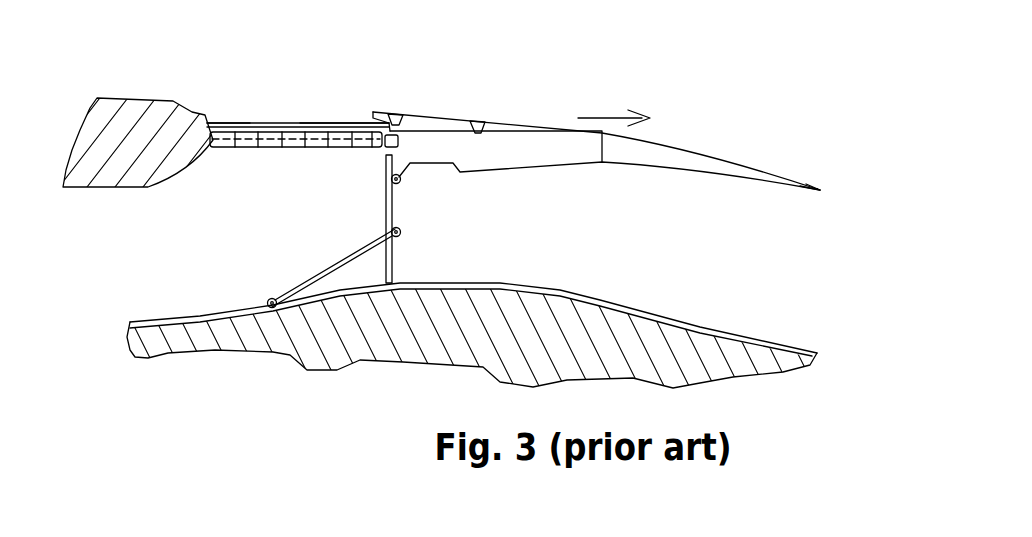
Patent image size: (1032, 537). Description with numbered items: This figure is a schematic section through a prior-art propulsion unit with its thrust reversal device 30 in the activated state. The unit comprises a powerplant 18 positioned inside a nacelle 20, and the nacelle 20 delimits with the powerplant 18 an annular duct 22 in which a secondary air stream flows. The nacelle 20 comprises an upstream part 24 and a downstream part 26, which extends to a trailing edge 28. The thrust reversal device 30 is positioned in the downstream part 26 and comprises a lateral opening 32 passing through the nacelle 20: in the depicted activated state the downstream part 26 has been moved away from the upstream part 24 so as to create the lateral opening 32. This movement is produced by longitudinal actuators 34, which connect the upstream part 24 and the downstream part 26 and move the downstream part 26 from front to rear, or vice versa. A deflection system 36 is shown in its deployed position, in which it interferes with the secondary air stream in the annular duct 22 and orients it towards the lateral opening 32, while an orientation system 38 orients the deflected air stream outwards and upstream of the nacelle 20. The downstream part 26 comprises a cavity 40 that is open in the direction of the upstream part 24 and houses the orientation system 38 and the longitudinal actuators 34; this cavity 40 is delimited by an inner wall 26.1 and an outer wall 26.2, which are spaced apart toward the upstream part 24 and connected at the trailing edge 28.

The powerplant 18 is at (748, 372).
The nacelle 20 is at (151, 114).
The annular duct 22 is at (156, 245).
The upstream part 24 is at (149, 104).
The downstream part 26 is at (607, 118).
The inner wall 26.1 is at (518, 168).
The outer wall 26.2 is at (500, 116).
The trailing edge 28 is at (822, 190).
The thrust reversal device 30 is at (292, 81).
The lateral opening 32 is at (240, 102).
The longitudinal actuators 34 is at (326, 108).
The deflection system 36 is at (414, 218).
The orientation system 38 is at (272, 158).
The cavity 40 is at (434, 106).